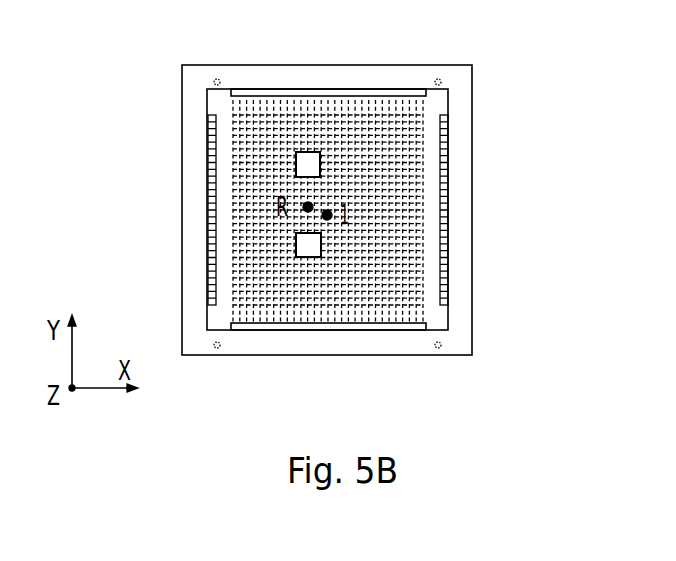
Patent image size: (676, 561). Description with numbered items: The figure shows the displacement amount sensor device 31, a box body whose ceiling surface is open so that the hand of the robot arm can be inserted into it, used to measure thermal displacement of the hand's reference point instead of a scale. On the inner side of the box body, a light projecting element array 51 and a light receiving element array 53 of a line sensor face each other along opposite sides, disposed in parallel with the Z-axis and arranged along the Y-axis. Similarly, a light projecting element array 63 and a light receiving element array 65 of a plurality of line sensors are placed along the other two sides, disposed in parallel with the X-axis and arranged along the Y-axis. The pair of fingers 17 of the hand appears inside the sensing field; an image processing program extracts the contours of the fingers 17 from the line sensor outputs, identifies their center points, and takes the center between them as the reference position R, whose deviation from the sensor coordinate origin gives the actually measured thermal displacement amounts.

The fingers 17 is at (306, 152).
The displacement amount sensor device 31 is at (492, 74).
The light projecting element array 51 is at (207, 117).
The light receiving element array 53 is at (448, 120).
The light projecting element array 63 is at (352, 90).
The light receiving element array 65 is at (400, 330).